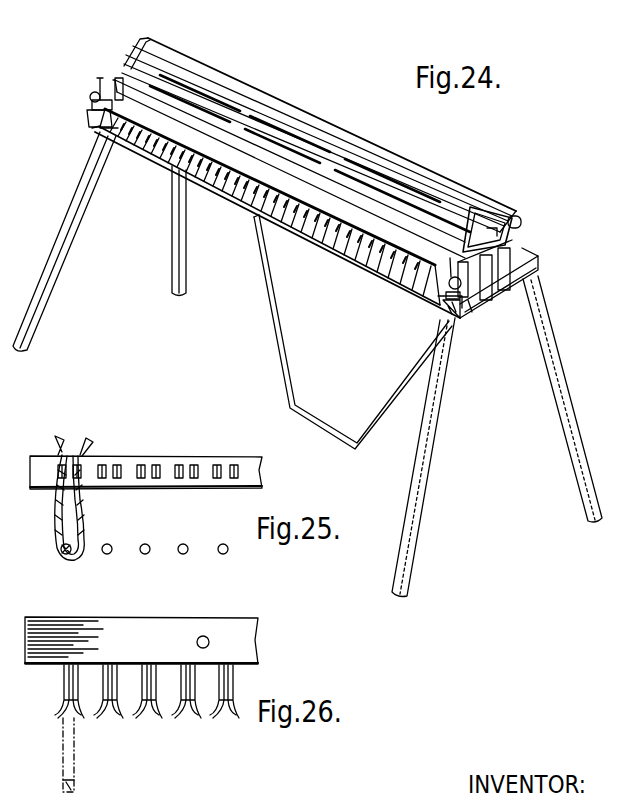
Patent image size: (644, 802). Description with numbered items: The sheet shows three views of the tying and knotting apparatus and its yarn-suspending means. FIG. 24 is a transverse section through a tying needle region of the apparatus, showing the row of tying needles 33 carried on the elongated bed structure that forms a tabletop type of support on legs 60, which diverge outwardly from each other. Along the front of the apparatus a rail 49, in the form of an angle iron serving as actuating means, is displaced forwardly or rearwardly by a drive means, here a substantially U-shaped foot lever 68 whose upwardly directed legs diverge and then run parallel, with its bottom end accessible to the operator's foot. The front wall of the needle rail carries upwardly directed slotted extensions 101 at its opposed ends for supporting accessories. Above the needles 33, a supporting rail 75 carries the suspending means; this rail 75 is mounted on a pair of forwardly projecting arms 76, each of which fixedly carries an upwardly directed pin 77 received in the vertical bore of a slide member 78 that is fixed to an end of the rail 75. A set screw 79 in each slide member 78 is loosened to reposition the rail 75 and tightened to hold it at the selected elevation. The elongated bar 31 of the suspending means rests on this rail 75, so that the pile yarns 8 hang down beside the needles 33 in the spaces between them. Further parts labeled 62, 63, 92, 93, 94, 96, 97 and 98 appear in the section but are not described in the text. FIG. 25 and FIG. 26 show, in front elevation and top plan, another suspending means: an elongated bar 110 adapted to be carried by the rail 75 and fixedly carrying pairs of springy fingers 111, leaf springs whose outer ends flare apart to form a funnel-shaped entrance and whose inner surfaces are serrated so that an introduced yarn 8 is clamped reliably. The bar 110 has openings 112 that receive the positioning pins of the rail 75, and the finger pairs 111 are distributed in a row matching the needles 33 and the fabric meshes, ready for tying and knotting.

In FIG. 25, the pile yarns 8 is at (56, 522).
In FIG. 24, the elongated bar 31 is at (107, 130).
In FIG. 24, the tying needles 33 is at (236, 200).
In FIG. 25, the tying needles 33 is at (143, 553).
In FIG. 24, the rail (actuating means) 49 is at (503, 282).
In FIG. 24, the legs 60 is at (103, 183).
In FIG. 24, the end rail edge 62 is at (520, 254).
In FIG. 24, the end rail corner 63 is at (539, 265).
In FIG. 24, the foot lever 68 is at (373, 432).
In FIG. 24, the supporting rail 75 is at (92, 104).
In FIG. 24, the forwardly projecting arms 76 is at (94, 120).
In FIG. 24, the upwardly directed pin 77 is at (100, 80).
In FIG. 24, the slide member 78 is at (113, 80).
In FIG. 24, the set screw 79 is at (90, 95).
In FIG. 24, the post 92 is at (484, 292).
In FIG. 24, the lid 93 is at (143, 41).
In FIG. 24, the lid hook 94 is at (515, 217).
In FIG. 24, the end cap 96 is at (473, 208).
In FIG. 24, the lid channel 97 is at (214, 85).
In FIG. 24, the lid channel 98 is at (240, 122).
In FIG. 24, the slotted extensions 101 is at (470, 312).
In FIG. 25, the elongated bar 110 is at (190, 464).
In FIG. 26, the elongated bar 110 is at (180, 631).
In FIG. 25, the springy fingers 111 is at (104, 465).
In FIG. 26, the openings 112 is at (207, 636).